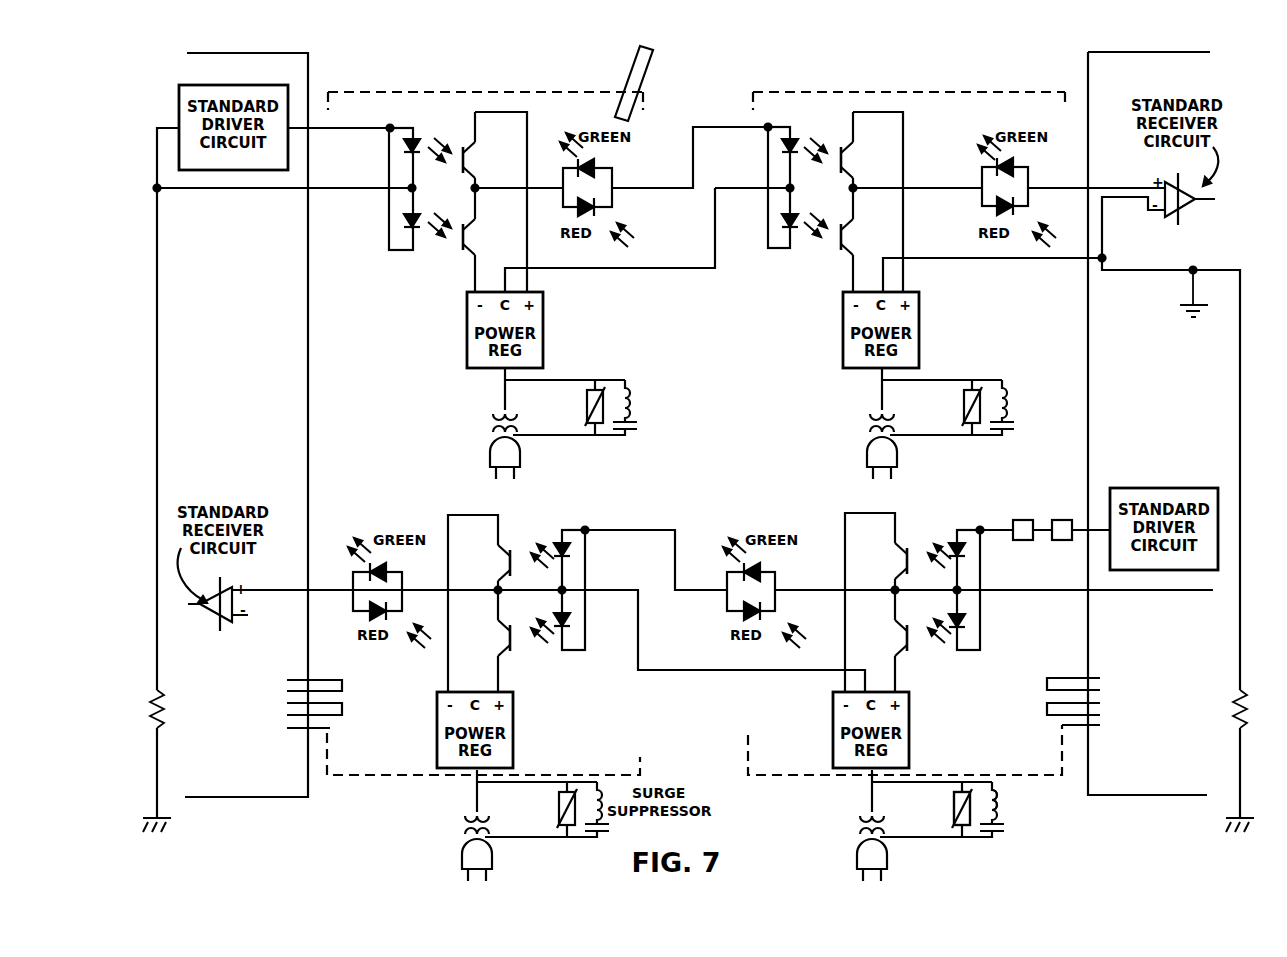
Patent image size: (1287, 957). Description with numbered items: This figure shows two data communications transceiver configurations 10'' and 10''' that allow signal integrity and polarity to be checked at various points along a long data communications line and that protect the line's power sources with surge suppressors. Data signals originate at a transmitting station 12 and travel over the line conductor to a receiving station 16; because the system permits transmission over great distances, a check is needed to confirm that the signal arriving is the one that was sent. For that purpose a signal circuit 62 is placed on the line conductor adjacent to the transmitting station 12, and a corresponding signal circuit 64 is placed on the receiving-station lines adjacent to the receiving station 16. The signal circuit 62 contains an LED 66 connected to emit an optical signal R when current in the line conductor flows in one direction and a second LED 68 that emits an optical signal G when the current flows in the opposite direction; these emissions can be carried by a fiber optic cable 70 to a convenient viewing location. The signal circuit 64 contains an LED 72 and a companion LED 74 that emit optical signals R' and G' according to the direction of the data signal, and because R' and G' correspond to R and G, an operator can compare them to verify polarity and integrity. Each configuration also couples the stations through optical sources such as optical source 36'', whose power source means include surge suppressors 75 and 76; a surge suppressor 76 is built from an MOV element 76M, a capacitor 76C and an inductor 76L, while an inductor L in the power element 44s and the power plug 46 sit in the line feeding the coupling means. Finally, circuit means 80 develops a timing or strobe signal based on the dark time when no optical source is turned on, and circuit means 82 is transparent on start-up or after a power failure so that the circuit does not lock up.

The configuration 10'' is at (485, 79).
The configuration 10''' is at (909, 79).
The transmitting station 12 is at (257, 780).
The receiving station 16 is at (1124, 786).
The optical source 36'' is at (610, 244).
The power source element 44s is at (464, 427).
The power supply plug 46 is at (834, 817).
The signal circuit 62 is at (546, 174).
The signal circuit 64 is at (1005, 139).
The LED 66 is at (614, 169).
The second LED 68 is at (561, 206).
The fiber optic cable 70 is at (625, 76).
The LED 72 is at (985, 206).
The green light emitting diode 74 is at (1030, 166).
The surge suppressor 75 is at (622, 360).
The surge suppressor 76 is at (988, 357).
The MOV element 76M is at (952, 795).
The inductor 76L is at (999, 796).
The capacitor 76C is at (1002, 822).
The circuit means 80 is at (1024, 532).
The circuit means 82 is at (1061, 524).
The optical signal G is at (575, 128).
The optical signal R is at (641, 234).
The optical signal G' is at (967, 130).
The optical signal R' is at (1058, 227).